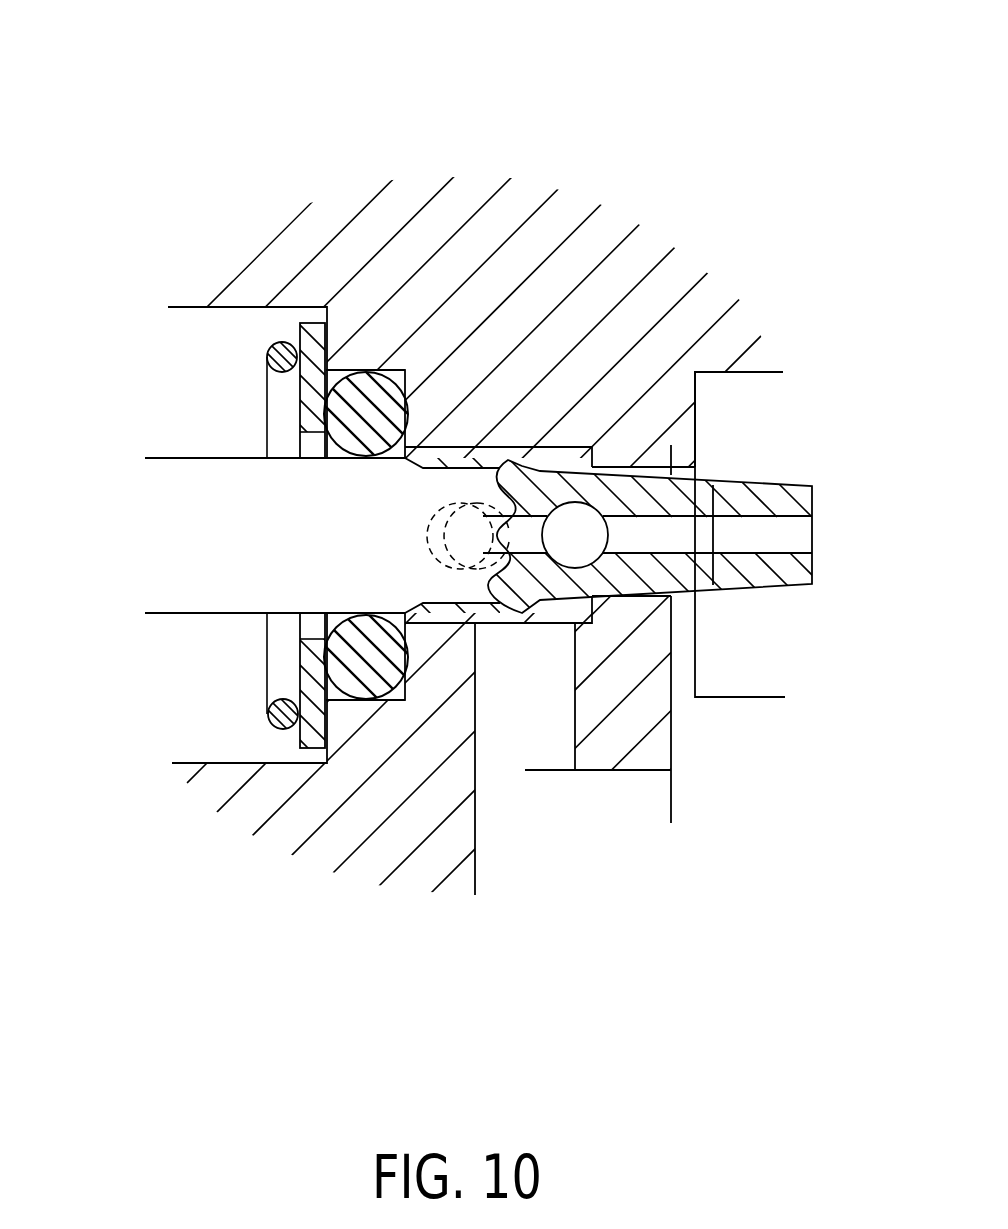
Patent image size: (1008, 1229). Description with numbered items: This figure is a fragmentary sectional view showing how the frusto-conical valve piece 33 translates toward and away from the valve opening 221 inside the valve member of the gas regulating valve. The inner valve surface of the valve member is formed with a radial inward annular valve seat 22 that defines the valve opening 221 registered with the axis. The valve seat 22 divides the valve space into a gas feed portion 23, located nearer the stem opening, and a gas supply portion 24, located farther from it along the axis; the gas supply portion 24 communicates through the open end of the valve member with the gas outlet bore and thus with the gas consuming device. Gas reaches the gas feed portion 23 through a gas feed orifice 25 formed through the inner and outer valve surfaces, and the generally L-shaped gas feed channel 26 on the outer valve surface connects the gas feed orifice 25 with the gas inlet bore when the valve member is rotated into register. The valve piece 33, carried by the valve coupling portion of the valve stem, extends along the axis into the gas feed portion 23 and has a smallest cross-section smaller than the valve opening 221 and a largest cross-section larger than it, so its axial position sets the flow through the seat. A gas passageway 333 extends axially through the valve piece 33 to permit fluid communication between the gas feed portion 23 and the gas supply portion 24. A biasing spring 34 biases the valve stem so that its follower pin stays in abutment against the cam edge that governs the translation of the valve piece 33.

The valve seat 22 is at (622, 462).
The valve opening 221 is at (660, 477).
The gas feed portion 23 is at (522, 622).
The gas supply portion 24 is at (723, 673).
The gas feed orifice 25 is at (542, 692).
The gas feed channel 26 is at (615, 798).
The valve piece 33 is at (133, 481).
The gas passageway 333 is at (650, 543).
The biasing spring 34 is at (273, 342).